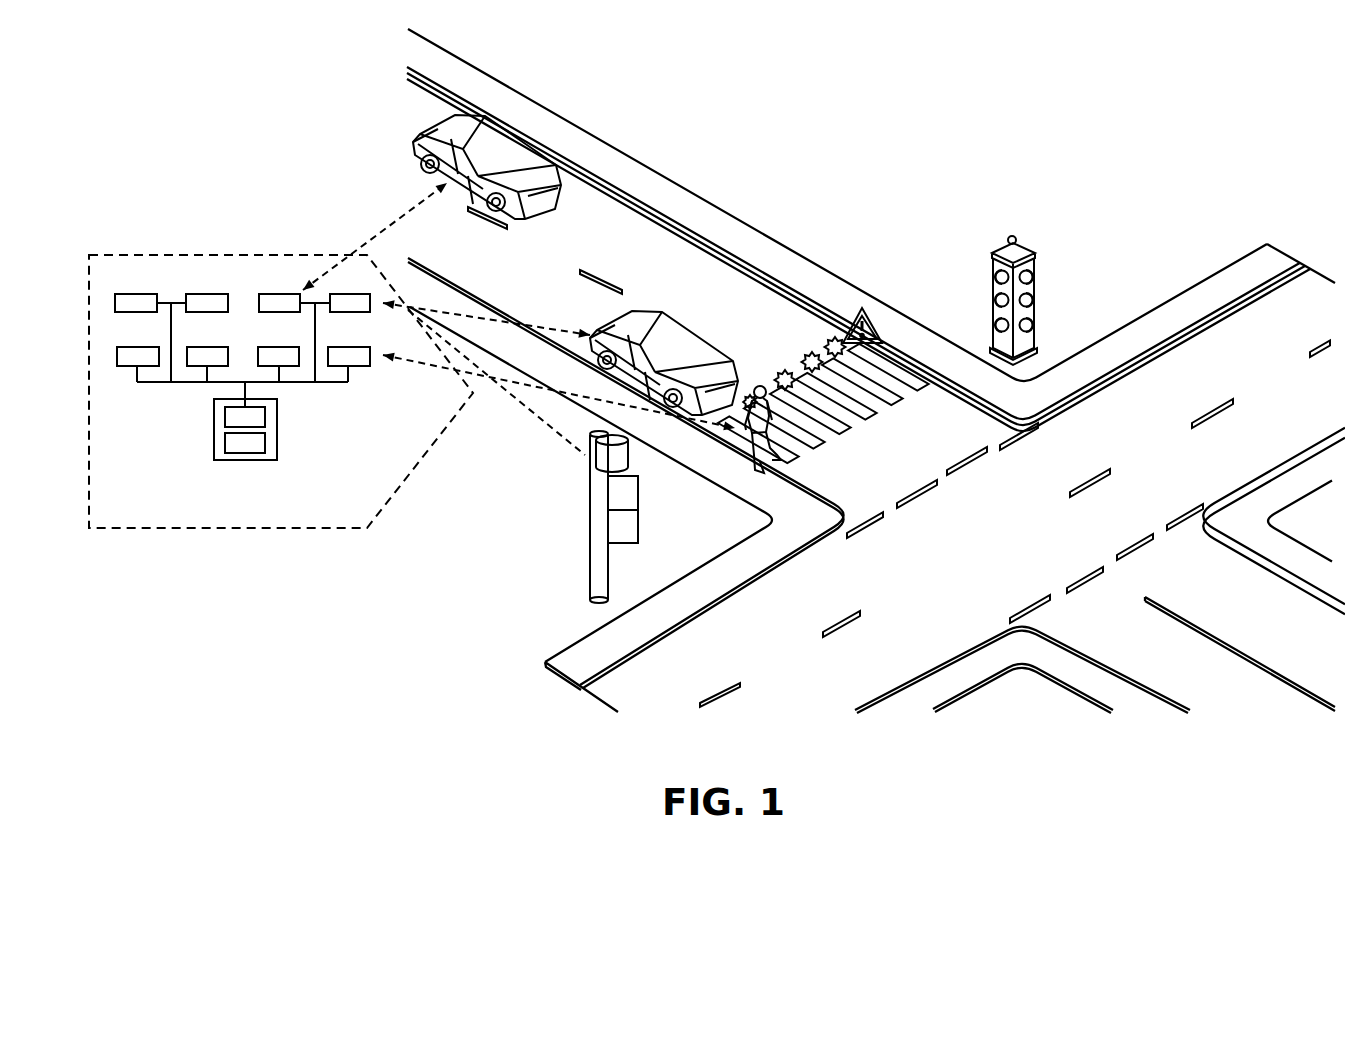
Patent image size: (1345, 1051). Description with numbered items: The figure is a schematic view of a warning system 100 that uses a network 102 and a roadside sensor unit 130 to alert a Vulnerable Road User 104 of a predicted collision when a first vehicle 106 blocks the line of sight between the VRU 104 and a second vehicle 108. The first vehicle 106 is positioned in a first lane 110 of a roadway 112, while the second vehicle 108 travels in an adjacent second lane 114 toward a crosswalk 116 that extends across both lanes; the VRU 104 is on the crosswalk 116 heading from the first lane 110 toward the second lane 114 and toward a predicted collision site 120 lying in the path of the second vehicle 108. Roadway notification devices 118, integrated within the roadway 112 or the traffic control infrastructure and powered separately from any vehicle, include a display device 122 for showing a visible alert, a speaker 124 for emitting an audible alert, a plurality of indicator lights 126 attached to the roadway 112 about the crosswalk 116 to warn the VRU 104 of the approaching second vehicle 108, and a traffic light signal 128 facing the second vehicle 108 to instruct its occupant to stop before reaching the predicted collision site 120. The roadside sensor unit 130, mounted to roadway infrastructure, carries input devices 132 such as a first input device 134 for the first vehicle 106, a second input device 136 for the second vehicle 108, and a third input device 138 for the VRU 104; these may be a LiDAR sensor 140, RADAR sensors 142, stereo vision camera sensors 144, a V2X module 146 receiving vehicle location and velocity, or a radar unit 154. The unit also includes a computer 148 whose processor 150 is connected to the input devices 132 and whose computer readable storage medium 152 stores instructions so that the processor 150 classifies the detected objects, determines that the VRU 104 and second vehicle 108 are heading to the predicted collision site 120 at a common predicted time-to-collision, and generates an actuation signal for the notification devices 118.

The warning system 100 is at (88, 254).
The network 102 is at (252, 145).
The Vulnerable Road User 104 is at (760, 470).
The first vehicle 106 is at (665, 322).
The second vehicle 108 is at (523, 143).
The first lane 110 is at (552, 306).
The roadway 112 is at (590, 184).
The second lane 114 is at (618, 247).
The crosswalk 116 is at (893, 343).
The roadway notification device 118 is at (792, 389).
The predicted collision site 120 is at (870, 404).
The display device 122 is at (620, 495).
The speaker 124 is at (620, 527).
The indicator lights 126 is at (783, 370).
The traffic light signal 128 is at (1014, 236).
The roadside sensor unit 130 is at (603, 452).
The input devices 132 is at (264, 312).
The first input device 134 is at (335, 312).
The second input device 136 is at (275, 294).
The third input device 138 is at (360, 366).
The Light Detection and Ranging sensor 140 is at (137, 294).
The RADAR sensors 142 is at (213, 294).
The stereo vision camera sensors 144 is at (127, 366).
The V2X module 146 is at (216, 337).
The computer 148 is at (230, 460).
The processor 150 is at (265, 418).
The non-transitory computer readable storage medium 152 is at (265, 445).
The radar unit 154 is at (258, 352).